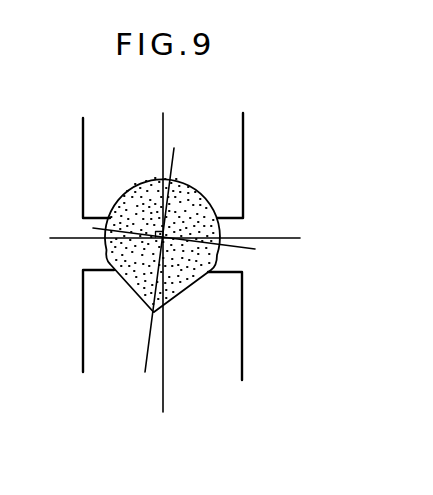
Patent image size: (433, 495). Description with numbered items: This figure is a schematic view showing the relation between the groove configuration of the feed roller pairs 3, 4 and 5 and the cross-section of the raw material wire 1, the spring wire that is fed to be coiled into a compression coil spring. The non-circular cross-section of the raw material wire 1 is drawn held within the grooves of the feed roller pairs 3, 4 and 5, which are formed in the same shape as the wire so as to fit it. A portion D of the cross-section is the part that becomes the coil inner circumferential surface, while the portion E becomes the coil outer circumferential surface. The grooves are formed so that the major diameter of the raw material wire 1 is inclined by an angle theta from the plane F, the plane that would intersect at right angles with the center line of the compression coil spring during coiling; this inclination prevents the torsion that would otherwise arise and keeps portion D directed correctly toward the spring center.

The raw material wire 1 is at (192, 178).
The feed roller pair 3 is at (252, 167).
The feed roller pair 4 is at (96, 168).
The feed roller pair 5 is at (162, 325).
The portion of the cross-section D is at (146, 160).
The portion of the cross-section E is at (185, 311).
The plane F is at (163, 277).